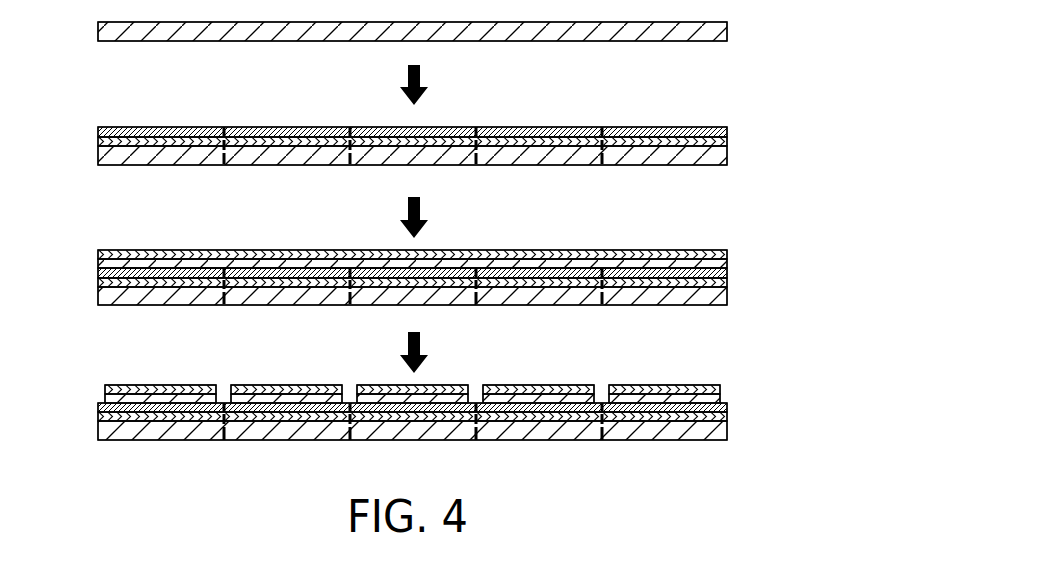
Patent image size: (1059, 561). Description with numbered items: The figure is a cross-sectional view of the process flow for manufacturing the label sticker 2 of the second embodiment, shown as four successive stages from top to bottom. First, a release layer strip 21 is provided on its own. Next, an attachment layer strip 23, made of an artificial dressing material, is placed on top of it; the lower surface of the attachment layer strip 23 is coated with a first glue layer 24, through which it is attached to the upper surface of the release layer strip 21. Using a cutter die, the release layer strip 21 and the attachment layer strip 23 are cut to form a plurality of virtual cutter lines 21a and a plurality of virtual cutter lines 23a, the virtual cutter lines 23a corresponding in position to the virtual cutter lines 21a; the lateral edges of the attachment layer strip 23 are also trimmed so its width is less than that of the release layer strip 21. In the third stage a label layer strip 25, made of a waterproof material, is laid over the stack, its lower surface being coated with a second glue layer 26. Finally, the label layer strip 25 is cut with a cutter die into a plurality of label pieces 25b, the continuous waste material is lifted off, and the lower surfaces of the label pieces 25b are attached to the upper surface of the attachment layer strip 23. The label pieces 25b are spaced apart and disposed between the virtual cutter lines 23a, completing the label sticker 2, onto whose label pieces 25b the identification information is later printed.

The label sticker 2 is at (117, 370).
The release layer strip 21 is at (727, 33).
The virtual cutter lines 21a is at (605, 155).
The attachment layer strip 23 is at (727, 129).
The virtual cutter lines 23a is at (588, 139).
The first glue layer 24 is at (727, 141).
The label layer strip 25 is at (98, 254).
The label pieces 25b is at (105, 389).
The second glue layer 26 is at (98, 266).